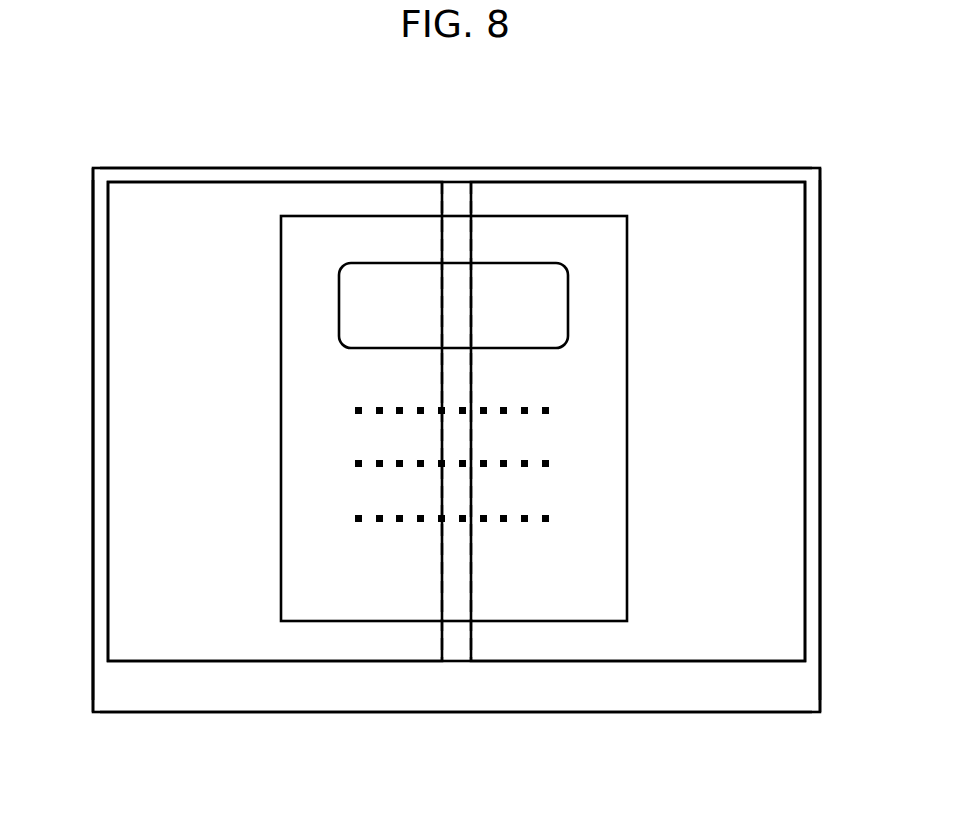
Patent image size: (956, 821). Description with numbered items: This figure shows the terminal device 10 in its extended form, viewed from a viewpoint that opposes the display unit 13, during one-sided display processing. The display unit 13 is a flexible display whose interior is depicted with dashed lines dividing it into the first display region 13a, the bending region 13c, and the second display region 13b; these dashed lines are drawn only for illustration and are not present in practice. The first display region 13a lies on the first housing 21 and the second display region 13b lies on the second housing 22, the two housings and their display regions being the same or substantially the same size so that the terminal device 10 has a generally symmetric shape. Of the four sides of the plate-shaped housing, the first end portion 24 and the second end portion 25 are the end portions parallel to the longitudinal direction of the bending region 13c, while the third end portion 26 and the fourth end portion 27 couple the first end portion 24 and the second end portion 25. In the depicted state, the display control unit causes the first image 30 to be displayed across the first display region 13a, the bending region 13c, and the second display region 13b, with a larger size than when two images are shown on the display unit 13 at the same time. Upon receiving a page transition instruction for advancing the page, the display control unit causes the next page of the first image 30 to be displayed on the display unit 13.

The terminal device 10 is at (752, 133).
The display unit 13 is at (536, 182).
The first display region 13a is at (207, 208).
The second display region 13b is at (627, 197).
The bending region 13c is at (455, 200).
The first housing 21 is at (103, 180).
The second housing 22 is at (813, 187).
The first end portion 24 is at (92, 385).
The second end portion 25 is at (821, 362).
The third end portion 26 is at (333, 167).
The fourth end portion 27 is at (428, 713).
The first image 30 is at (280, 498).